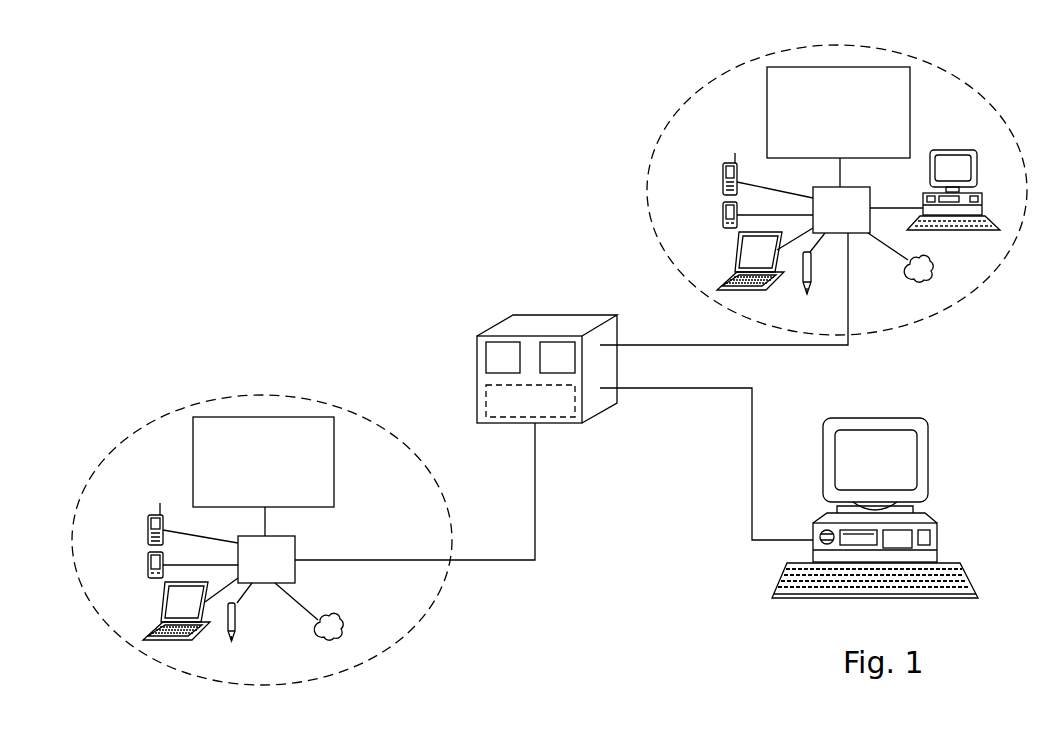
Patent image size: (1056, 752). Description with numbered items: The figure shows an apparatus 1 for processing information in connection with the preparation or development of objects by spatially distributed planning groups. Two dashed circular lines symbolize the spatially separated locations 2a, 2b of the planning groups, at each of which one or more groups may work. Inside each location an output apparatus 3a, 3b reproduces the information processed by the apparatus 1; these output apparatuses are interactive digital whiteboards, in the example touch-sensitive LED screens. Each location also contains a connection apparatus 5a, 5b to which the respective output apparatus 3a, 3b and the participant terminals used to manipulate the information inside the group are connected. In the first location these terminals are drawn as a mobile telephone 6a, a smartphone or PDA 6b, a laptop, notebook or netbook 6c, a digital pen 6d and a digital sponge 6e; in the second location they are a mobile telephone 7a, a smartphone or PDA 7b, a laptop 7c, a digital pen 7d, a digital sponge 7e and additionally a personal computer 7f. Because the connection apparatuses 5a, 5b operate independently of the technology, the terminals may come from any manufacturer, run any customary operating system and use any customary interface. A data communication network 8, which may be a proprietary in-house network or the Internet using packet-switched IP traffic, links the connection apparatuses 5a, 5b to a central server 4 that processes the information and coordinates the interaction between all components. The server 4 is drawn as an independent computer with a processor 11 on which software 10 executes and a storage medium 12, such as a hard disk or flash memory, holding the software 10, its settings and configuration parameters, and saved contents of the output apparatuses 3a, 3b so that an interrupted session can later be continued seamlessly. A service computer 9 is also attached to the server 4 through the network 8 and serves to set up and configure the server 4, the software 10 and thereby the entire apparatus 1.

The apparatus for processing information 1 is at (381, 224).
The location 2a is at (206, 400).
The location 2b is at (688, 98).
The output apparatus 3a is at (251, 476).
The output apparatus 3b is at (826, 123).
The server 4 is at (520, 328).
The connection apparatus 5a is at (255, 571).
The connection apparatus 5b is at (829, 221).
The mobile telephone 6a is at (148, 527).
The smartphone or PDA 6b is at (148, 565).
The laptop, notebook or netbook 6c is at (163, 608).
The digital pen 6d is at (237, 632).
The digital sponge 6e is at (342, 630).
The mobile telephone 7a is at (723, 178).
The smartphone or PDA 7b is at (723, 214).
The laptop, notebook or netbook 7c is at (719, 258).
The digital pen 7d is at (808, 278).
The digital sponge 7e is at (932, 273).
The personal computer 7f is at (982, 198).
The data communication network 8 is at (535, 527).
The service computer 9 is at (932, 553).
The software 10 is at (558, 405).
The processor 11 is at (495, 348).
The storage medium 12 is at (558, 357).